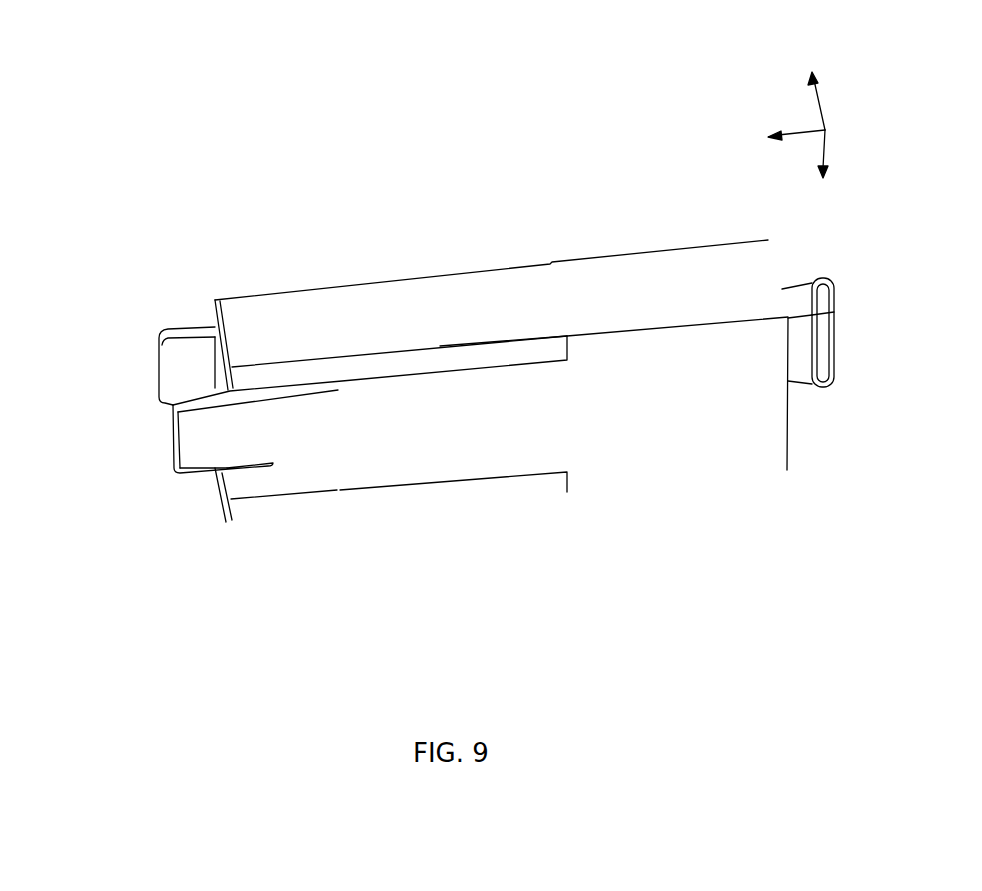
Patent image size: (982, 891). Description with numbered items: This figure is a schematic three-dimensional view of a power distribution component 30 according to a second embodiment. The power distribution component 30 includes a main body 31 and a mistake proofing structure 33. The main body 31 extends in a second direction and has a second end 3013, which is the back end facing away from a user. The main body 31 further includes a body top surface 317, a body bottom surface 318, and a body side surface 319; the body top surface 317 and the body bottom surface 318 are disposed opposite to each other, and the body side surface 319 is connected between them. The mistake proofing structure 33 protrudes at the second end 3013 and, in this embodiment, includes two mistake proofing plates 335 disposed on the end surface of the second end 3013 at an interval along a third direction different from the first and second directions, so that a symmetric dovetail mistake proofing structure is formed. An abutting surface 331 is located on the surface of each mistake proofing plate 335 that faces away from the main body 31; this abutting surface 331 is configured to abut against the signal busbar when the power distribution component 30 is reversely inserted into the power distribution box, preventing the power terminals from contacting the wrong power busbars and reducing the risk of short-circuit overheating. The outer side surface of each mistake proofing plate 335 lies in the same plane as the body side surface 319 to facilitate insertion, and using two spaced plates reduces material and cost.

The power distribution component 30 is at (545, 75).
The main body 31 is at (610, 628).
The body top surface 317 is at (501, 429).
The body bottom surface 318 is at (524, 451).
The body side surface 319 is at (370, 475).
The second end 3013 is at (369, 516).
The mistake proofing structure 33 is at (90, 460).
The abutting surface 331 is at (139, 345).
The mistake proofing plate 335 is at (189, 468).